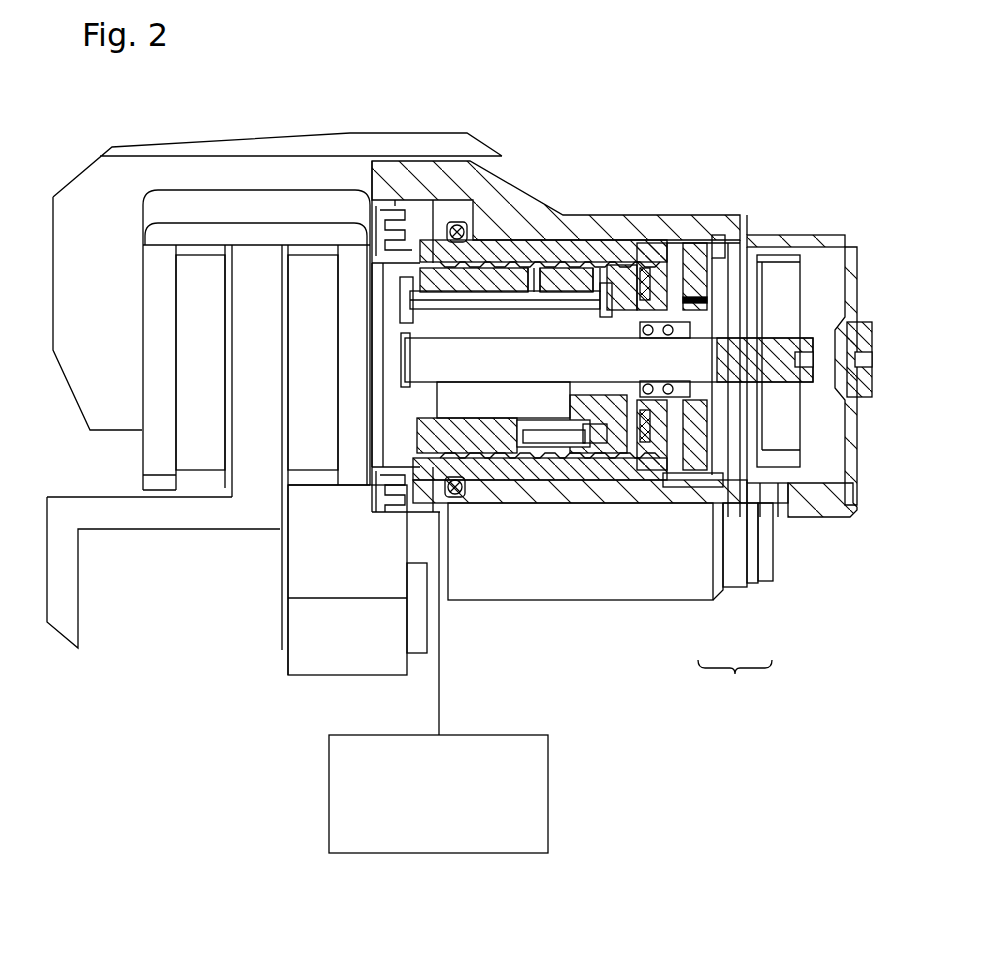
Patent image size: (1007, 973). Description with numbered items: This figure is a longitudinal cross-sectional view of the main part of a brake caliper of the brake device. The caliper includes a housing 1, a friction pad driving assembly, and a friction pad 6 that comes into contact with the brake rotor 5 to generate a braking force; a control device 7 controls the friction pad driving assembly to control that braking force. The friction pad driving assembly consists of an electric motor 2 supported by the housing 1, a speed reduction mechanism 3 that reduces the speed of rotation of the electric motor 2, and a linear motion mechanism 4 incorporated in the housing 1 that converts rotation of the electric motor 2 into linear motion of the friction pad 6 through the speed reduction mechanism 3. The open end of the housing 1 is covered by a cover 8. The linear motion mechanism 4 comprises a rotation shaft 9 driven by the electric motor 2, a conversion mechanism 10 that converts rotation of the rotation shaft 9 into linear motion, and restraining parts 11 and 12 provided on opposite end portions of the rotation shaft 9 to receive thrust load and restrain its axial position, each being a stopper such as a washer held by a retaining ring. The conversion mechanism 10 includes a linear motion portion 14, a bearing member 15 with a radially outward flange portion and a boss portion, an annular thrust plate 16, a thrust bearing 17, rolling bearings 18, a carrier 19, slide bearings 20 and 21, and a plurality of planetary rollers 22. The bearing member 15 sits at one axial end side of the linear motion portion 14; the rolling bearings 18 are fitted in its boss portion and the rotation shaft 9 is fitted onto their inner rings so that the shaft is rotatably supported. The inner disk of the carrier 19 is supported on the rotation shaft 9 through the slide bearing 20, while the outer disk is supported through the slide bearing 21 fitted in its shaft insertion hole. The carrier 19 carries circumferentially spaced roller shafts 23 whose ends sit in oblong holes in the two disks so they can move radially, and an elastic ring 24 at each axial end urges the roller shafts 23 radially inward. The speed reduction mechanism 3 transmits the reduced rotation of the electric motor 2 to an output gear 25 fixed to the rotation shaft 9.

The housing 1 is at (458, 172).
The electric motor 2 is at (715, 495).
The speed reduction mechanism 3 is at (800, 478).
The linear motion mechanism 4 is at (700, 568).
The brake rotor 5 is at (250, 492).
The friction pad 6 is at (198, 457).
The control device 7 is at (549, 752).
The cover 8 is at (860, 237).
The rotation shaft 9 is at (622, 300).
The conversion mechanism 10 is at (564, 248).
The restraining part 11 is at (400, 326).
The restraining part 12 is at (800, 245).
The linear motion portion 14 is at (513, 465).
The bearing member 15 is at (683, 250).
The annular thrust plate 16 is at (650, 270).
The thrust bearing 17 is at (647, 432).
The rolling bearing 18 is at (662, 497).
The carrier 19 is at (457, 437).
The slide bearing 20 is at (585, 445).
The slide bearing 21 is at (418, 245).
The planetary roller 22 is at (502, 262).
The roller shaft 23 is at (463, 307).
The elastic ring 24 is at (405, 430).
The output gear 25 is at (785, 438).